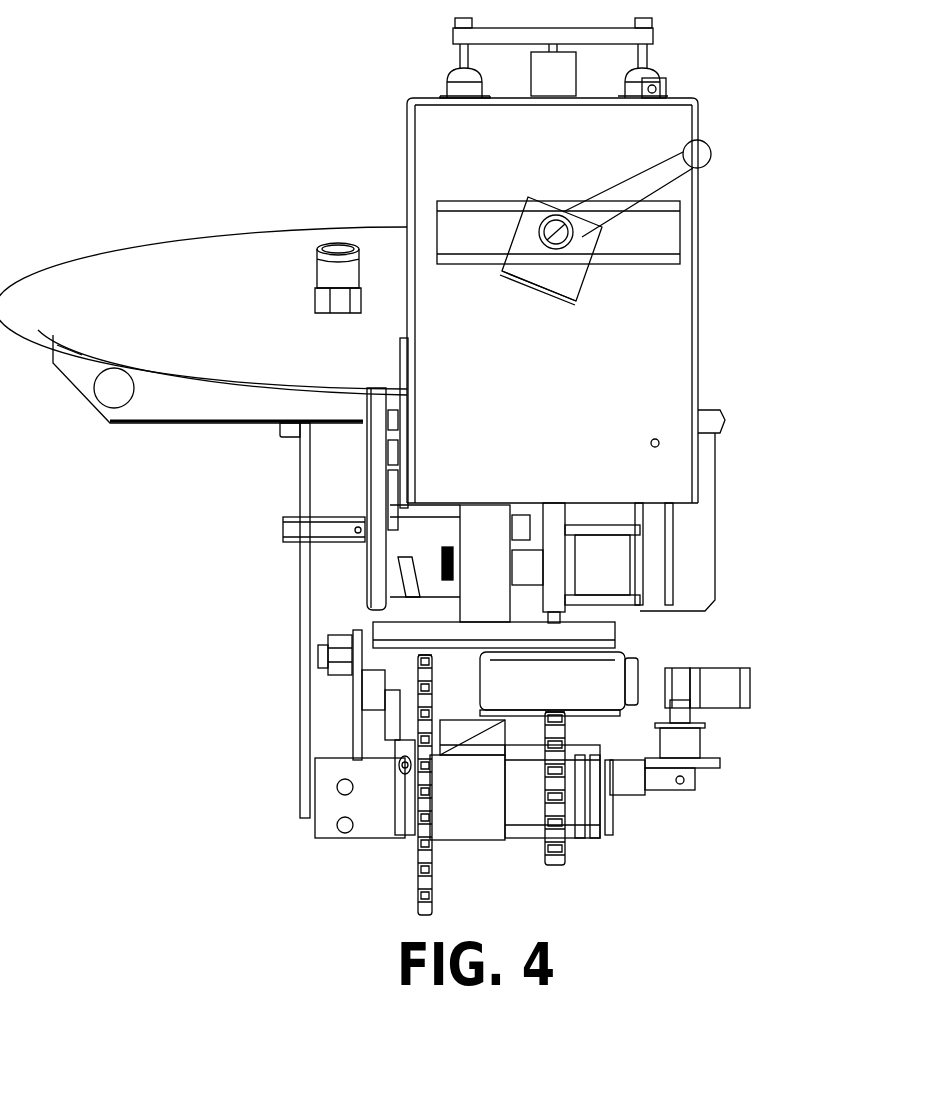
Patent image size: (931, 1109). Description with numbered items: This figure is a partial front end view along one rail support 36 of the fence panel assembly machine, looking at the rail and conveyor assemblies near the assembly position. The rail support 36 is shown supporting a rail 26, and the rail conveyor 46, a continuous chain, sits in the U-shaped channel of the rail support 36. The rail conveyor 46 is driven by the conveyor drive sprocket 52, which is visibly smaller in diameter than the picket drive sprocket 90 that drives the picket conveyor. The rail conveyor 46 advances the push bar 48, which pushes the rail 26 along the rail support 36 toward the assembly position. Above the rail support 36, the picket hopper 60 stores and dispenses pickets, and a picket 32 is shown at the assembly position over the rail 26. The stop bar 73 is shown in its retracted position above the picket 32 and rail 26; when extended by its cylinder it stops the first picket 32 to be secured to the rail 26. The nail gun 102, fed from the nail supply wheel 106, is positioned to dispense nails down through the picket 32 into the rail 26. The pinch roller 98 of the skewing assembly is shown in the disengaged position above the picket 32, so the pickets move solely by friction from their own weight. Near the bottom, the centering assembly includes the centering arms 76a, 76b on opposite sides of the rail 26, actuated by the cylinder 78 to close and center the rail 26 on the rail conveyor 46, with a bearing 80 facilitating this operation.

The nail supply wheel 106 is at (232, 268).
The pinch roller 98 is at (377, 582).
The nail gun 102 is at (553, 597).
The stop bar 73 is at (655, 573).
The picket hopper 60 is at (693, 593).
The picket 32 is at (403, 642).
The centering arm 76b is at (385, 683).
The picket drive sprocket 90 is at (425, 790).
The rail conveyor 46 is at (550, 727).
The drive sprocket 52 is at (557, 787).
The rail 26 is at (563, 680).
The push bar 48 is at (630, 678).
The rail support 36 is at (605, 712).
The cylinder 78 is at (688, 785).
The bearing 80 is at (682, 745).
The centering arm 76a is at (710, 687).